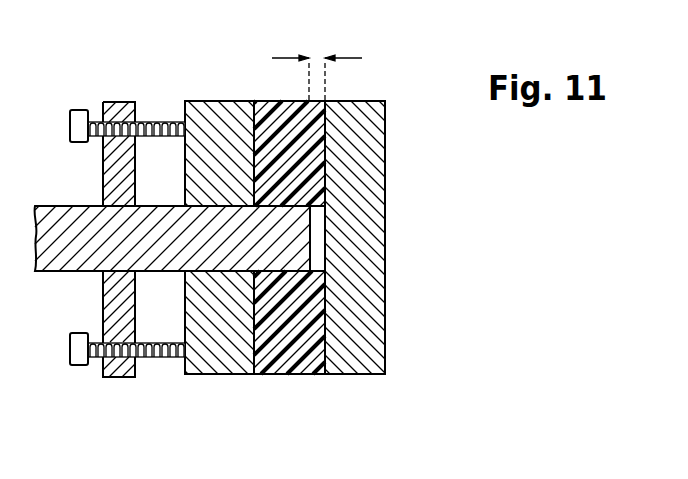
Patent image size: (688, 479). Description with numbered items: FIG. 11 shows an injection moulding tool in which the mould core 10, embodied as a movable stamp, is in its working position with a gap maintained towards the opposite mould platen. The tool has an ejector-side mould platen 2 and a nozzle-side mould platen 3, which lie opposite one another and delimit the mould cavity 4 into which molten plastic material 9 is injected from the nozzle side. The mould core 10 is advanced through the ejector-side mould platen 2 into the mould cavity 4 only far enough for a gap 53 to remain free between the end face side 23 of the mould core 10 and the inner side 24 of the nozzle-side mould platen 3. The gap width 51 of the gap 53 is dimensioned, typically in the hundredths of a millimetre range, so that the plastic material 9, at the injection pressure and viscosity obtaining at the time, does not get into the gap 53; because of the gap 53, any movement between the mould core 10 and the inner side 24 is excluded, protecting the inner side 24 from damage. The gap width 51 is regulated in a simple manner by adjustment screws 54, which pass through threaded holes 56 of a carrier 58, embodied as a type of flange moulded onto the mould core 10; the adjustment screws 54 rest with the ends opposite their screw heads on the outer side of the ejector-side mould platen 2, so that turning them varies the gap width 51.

The ejector-side mould platen 2 is at (212, 352).
The nozzle-side mould platen 3 is at (362, 340).
The mould cavity 4 is at (287, 275).
The plastic material 9 is at (262, 330).
The mould core 10 is at (241, 252).
The end face side 23 is at (313, 218).
The inner side 24 is at (322, 357).
The gap width 51 is at (318, 62).
The gap 53 is at (318, 253).
The adjustment screws 54 is at (80, 110).
The threaded holes 56 is at (121, 357).
The carrier 58 is at (110, 165).